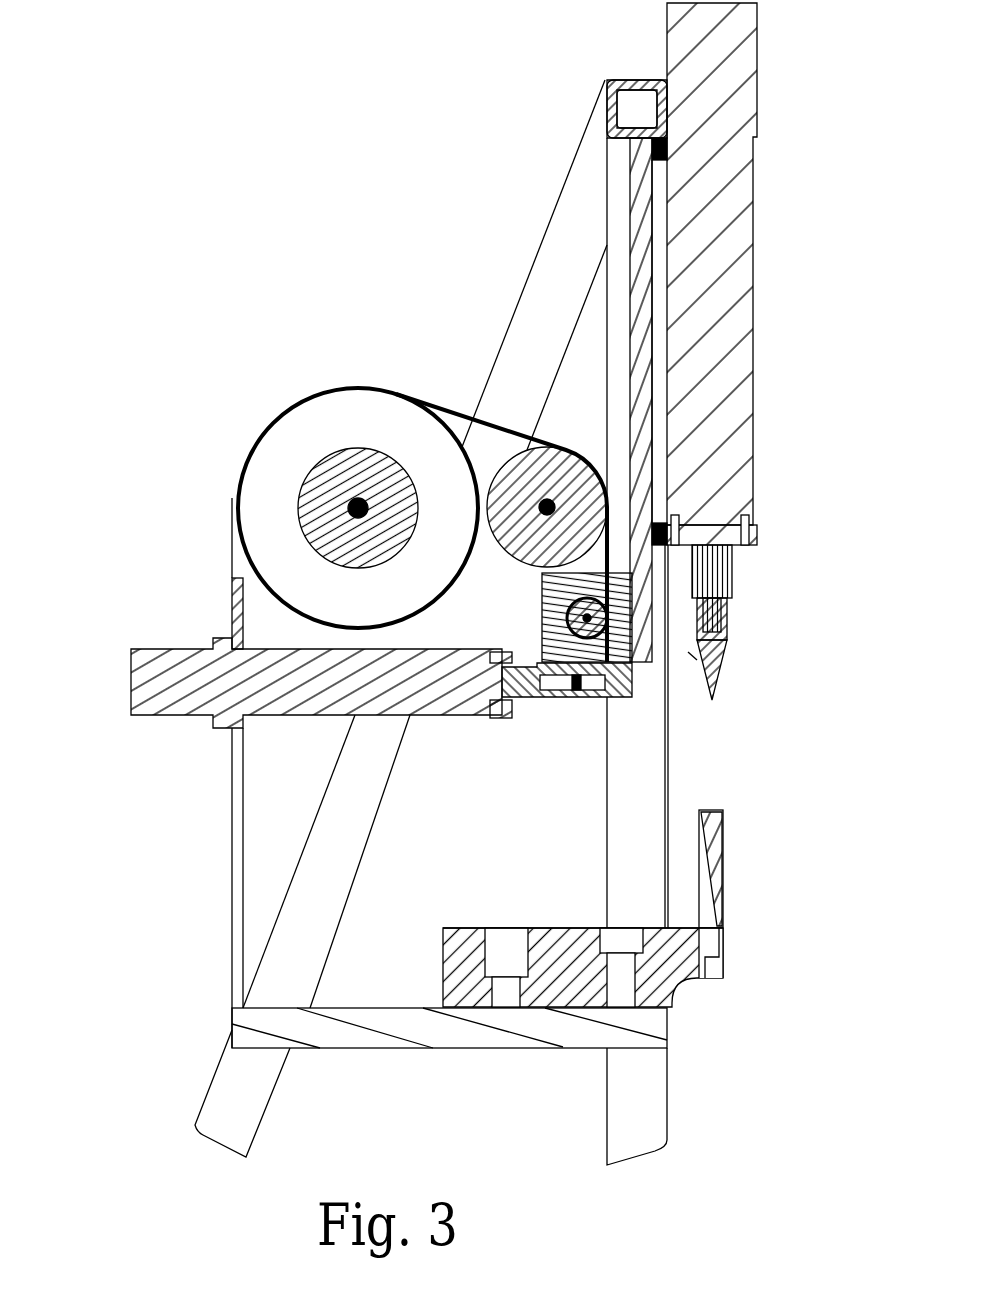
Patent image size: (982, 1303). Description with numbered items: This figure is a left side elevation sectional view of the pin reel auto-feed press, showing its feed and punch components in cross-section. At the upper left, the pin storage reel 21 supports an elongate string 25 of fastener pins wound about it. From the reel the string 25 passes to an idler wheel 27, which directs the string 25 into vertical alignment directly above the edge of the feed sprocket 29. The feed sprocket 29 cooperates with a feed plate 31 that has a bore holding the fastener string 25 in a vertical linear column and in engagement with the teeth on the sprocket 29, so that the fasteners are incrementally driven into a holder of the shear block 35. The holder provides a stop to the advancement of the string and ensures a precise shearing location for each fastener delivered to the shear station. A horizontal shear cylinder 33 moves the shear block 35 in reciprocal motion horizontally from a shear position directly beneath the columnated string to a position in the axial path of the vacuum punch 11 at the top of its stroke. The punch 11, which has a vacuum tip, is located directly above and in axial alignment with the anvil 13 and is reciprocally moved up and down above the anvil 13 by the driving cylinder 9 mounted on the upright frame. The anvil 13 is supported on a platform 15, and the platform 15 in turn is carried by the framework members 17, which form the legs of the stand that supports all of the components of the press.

The driving cylinder 9 is at (740, 238).
The punch 11 is at (732, 646).
The anvil 13 is at (722, 870).
The platform 15 is at (470, 1040).
The framework members 17 is at (660, 1093).
The pin storage reel 21 is at (287, 432).
The string 25 is at (468, 420).
The idler wheel 27 is at (553, 455).
The feed sprocket 29 is at (567, 615).
The feed plate 31 is at (542, 580).
The shear cylinder 33 is at (136, 693).
The shear block 35 is at (633, 698).